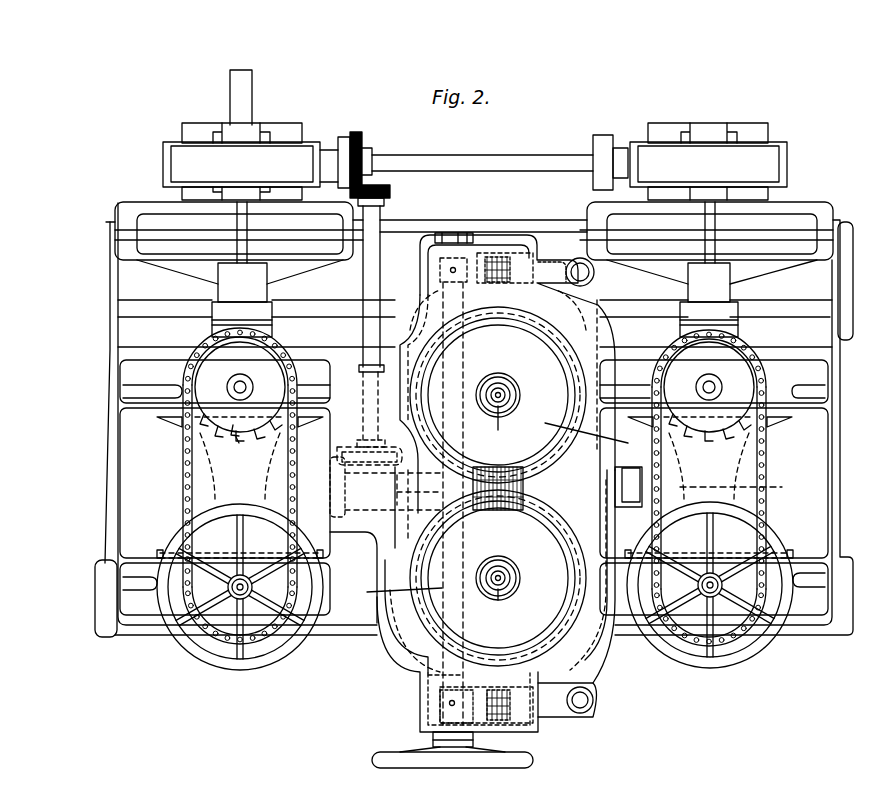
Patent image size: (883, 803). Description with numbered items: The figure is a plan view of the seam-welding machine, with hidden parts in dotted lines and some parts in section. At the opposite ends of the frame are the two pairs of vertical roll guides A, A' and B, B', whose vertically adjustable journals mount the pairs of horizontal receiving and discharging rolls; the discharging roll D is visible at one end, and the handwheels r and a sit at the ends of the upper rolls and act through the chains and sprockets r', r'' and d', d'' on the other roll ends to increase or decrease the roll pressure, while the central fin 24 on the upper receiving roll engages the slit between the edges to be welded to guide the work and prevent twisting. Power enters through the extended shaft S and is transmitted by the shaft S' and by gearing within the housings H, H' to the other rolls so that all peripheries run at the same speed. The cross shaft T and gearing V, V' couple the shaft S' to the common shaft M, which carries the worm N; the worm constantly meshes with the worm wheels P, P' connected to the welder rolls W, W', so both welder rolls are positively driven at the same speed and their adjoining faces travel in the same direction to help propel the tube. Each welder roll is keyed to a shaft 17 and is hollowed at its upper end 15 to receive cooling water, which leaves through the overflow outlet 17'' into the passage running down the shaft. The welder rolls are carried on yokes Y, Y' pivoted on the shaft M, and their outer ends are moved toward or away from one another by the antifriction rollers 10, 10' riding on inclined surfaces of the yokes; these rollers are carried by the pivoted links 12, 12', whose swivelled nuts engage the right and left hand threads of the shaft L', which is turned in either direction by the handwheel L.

The extended shaft S is at (224, 97).
The shaft S' is at (474, 158).
The gearing V is at (382, 165).
The cross shaft T is at (388, 265).
The housing H' is at (232, 246).
The housing H is at (724, 263).
The vertical roll guide B' is at (325, 420).
The vertical roll guide B is at (189, 589).
The vertical roll guide A' is at (734, 427).
The vertical roll guide A is at (714, 614).
The discharging roll D is at (172, 427).
The chain and sprocket d' is at (223, 486).
The chain and sprocket d'' is at (243, 449).
The left hand wheel a is at (188, 642).
The chain and sprocket r'' is at (710, 405).
The chain and sprocket r' is at (722, 488).
The central fin 24 is at (743, 492).
The handwheel r is at (709, 597).
The yoke Y' is at (512, 479).
The yoke Y is at (499, 599).
The welder roll W' is at (526, 326).
The welder roll W is at (624, 503).
The worm wheel P' is at (498, 395).
The worm wheel P is at (498, 578).
The shaft 17 is at (493, 463).
The overflow outlet 17'' is at (514, 512).
The hollow upper end 15 is at (498, 513).
The worm N is at (495, 500).
The gearing V' is at (385, 493).
The common shaft M is at (380, 504).
The antifriction roller 10' is at (490, 236).
The pivoted link 12' is at (548, 236).
The antifriction roller 10 is at (529, 722).
The pivoted link 12 is at (421, 706).
The shaft L' is at (416, 673).
The handwheel L is at (452, 764).